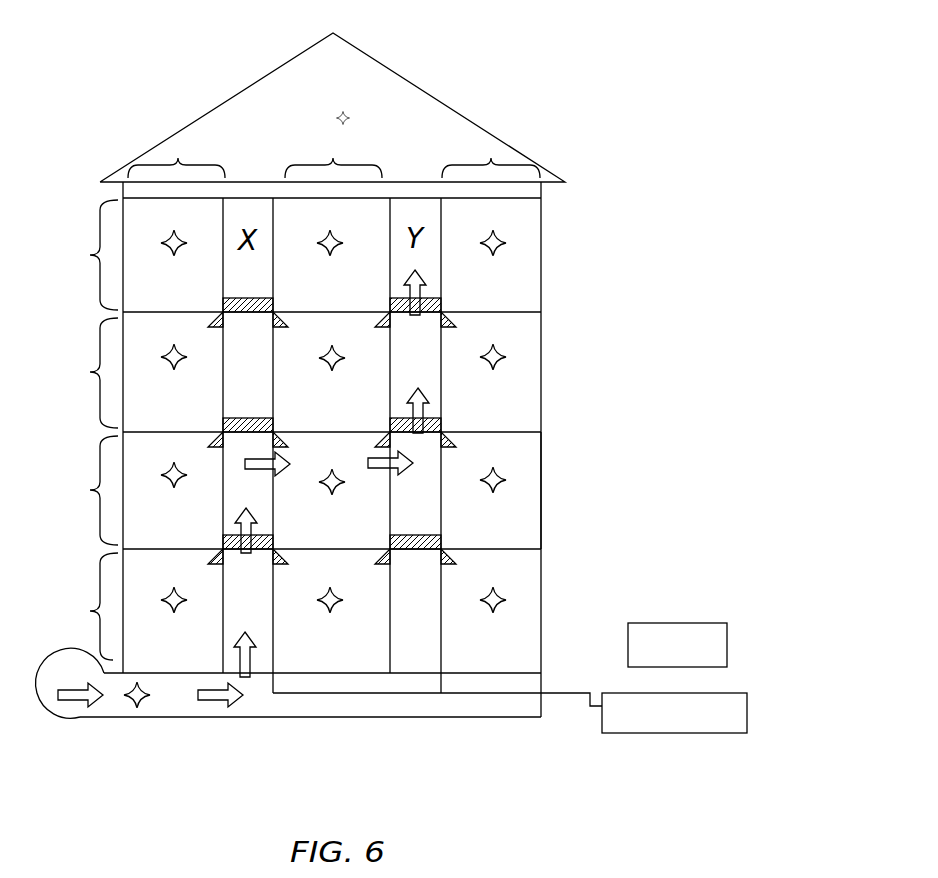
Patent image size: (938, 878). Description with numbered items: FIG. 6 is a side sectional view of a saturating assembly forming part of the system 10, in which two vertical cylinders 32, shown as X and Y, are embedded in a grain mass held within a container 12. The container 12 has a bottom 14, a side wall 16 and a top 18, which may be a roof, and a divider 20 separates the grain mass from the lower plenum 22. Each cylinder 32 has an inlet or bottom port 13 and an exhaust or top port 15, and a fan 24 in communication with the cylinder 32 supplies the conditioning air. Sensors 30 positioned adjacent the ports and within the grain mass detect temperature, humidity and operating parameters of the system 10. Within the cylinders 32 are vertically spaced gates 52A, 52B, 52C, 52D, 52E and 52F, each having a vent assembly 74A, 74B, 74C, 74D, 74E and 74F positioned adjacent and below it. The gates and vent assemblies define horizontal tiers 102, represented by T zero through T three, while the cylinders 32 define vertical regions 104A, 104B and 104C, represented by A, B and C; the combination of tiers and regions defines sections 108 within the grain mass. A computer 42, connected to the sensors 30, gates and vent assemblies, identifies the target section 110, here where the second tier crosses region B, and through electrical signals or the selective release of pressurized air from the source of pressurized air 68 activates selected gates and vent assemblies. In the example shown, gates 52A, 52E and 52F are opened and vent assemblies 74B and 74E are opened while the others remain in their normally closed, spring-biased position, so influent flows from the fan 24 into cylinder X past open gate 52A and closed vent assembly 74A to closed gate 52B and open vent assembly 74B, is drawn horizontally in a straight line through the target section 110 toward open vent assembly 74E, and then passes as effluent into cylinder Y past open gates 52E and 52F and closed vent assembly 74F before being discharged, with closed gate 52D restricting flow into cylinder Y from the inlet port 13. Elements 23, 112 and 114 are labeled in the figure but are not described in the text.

The system 10 is at (603, 402).
The container 12 is at (592, 199).
The inlet or bottom port 13 is at (405, 677).
The bottom 14 is at (420, 717).
The exhaust or top port 15 is at (245, 177).
The side wall 16 is at (541, 530).
The top 18 is at (512, 150).
The divider 20 is at (490, 672).
The lower plenum 22 is at (505, 706).
The interior wall 23 is at (522, 484).
The fan 24 is at (47, 697).
The sensors 30 is at (168, 352).
The cylinder 32 is at (274, 388).
The computer 42 is at (716, 623).
The gate 52A is at (273, 545).
The gate 52B is at (273, 428).
The gate 52C is at (273, 306).
The gate 52D is at (441, 542).
The gate 52E is at (441, 426).
The gate 52F is at (441, 306).
The source of pressurized air 68 is at (717, 733).
The vent assembly 74A is at (289, 564).
The vent assembly 74B is at (289, 447).
The vent assembly 74C is at (289, 327).
The vent assembly 74D is at (457, 564).
The vent assembly 74E is at (457, 447).
The vent assembly 74F is at (457, 327).
The horizontal tiers 102 is at (79, 430).
The vertical region 104A is at (176, 153).
The vertical region 104B is at (333, 153).
The vertical region 104C is at (491, 153).
The sections 108 is at (251, 464).
The target section 110 is at (348, 493).
The duct sensor 112 is at (137, 705).
The attic sensor 114 is at (343, 112).